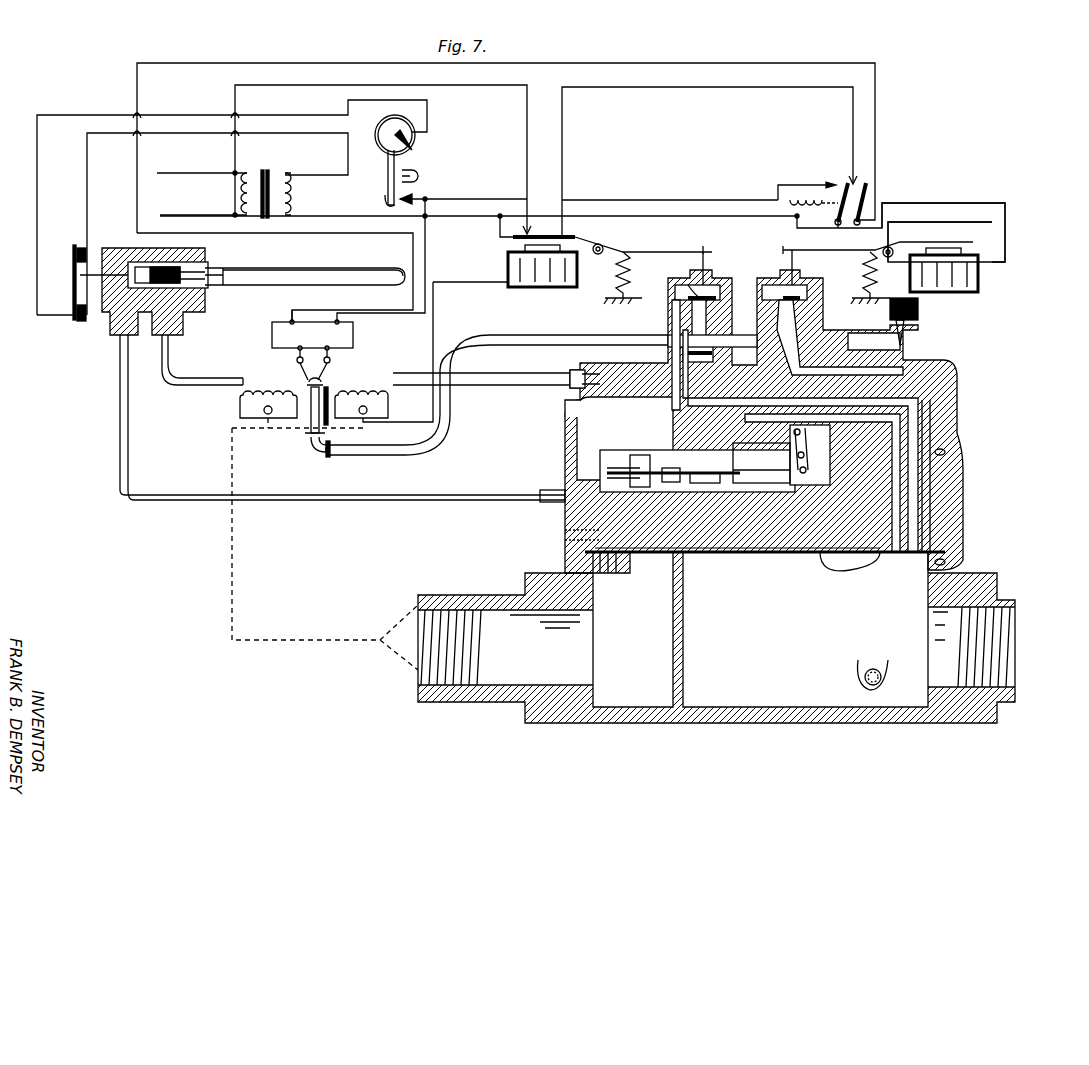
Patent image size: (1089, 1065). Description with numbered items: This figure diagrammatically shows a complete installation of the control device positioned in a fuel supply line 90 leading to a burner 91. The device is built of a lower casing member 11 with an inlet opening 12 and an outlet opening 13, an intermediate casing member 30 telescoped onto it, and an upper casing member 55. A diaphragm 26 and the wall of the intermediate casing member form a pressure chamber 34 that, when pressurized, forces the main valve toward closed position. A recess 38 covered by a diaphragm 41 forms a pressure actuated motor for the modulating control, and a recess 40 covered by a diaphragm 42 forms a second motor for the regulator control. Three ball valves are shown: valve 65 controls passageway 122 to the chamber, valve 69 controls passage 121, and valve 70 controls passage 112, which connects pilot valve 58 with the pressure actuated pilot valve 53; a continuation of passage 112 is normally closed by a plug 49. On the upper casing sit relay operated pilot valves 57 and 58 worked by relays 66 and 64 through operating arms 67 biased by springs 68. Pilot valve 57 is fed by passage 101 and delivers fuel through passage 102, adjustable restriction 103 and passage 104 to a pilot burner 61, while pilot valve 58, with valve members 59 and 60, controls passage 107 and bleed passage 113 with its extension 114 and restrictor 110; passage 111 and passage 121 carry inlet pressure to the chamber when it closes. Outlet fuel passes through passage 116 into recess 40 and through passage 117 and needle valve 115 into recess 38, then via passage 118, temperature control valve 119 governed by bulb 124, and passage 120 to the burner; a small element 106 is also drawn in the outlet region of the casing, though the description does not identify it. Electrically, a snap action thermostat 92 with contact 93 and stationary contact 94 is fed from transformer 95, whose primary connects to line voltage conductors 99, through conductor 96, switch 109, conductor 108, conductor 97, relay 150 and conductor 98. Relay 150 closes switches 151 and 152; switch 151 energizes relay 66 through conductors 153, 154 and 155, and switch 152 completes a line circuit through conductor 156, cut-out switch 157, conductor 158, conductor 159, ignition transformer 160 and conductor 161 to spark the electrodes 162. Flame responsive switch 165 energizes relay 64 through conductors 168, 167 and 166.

The casing member 11 is at (985, 570).
The inlet opening 12 is at (1000, 648).
The outlet opening 13 is at (418, 665).
The diaphragm 26 is at (730, 575).
The intermediate casing member 30 is at (950, 493).
The pressure chamber 34 is at (776, 560).
The recess 38 is at (652, 458).
The recess 40 is at (685, 470).
The diaphragm 41 is at (618, 470).
The diaphragm 42 is at (715, 486).
The plug 49 is at (690, 410).
The pressure actuated pilot valve 53 is at (765, 425).
The casing member 55 is at (975, 395).
The pilot valve 57 is at (823, 280).
The pilot valve 58 is at (732, 280).
The valve member 59 is at (688, 292).
The valve member 60 is at (688, 353).
The pilot burner 61 is at (298, 420).
The relay 64 is at (530, 282).
The valve 65 is at (766, 485).
The relay 66 is at (950, 292).
The operating arm 67 is at (650, 252).
The biasing spring 68 is at (632, 268).
The valve 69 is at (761, 463).
The valve 70 is at (785, 430).
The fuel supply line 90 is at (325, 544).
The burner 91 is at (280, 395).
The thermostat 92 is at (418, 150).
The contact 93 is at (374, 200).
The stationary contact 94 is at (432, 185).
The transformer 95 is at (264, 170).
The conductor 96 is at (316, 175).
The conductor 97 is at (760, 200).
The conductor 98 is at (705, 217).
The line voltage conductors 99 is at (183, 173).
The passage 101 is at (950, 480).
The passage 102 is at (920, 350).
The adjustable restriction 103 is at (918, 327).
The passage 104 is at (468, 340).
The orifice 106 is at (855, 680).
The passage 107 is at (925, 518).
The conductor 108 is at (30, 155).
The switch 109 is at (70, 255).
The restrictor 110 is at (590, 388).
The passage 111 is at (800, 555).
The passage 112 is at (685, 412).
The passage 113 is at (608, 370).
The extension 114 is at (505, 372).
The needle valve 115 is at (555, 550).
The passage 116 is at (612, 573).
The passage 117 is at (600, 573).
The passage 118 is at (445, 490).
The temperature control valve 119 is at (205, 250).
The passage 120 is at (222, 378).
The passage 121 is at (885, 575).
The passageway 122 is at (878, 468).
The bulb 124 is at (335, 262).
The relay 150 is at (795, 185).
The switch 151 is at (840, 183).
The switch 152 is at (870, 183).
The conductor 153 is at (778, 185).
The conductor 154 is at (955, 203).
The conductor 155 is at (1005, 230).
The conductor 156 is at (235, 103).
The cut-out switch 157 is at (520, 198).
The conductor 158 is at (562, 140).
The conductor 159 is at (880, 105).
The ignition transformer 160 is at (272, 330).
The conductor 161 is at (413, 300).
The electrodes 162 is at (296, 365).
The switch 165 is at (330, 389).
The conductor 166 is at (500, 237).
The conductor 167 is at (468, 290).
The conductor 168 is at (425, 262).